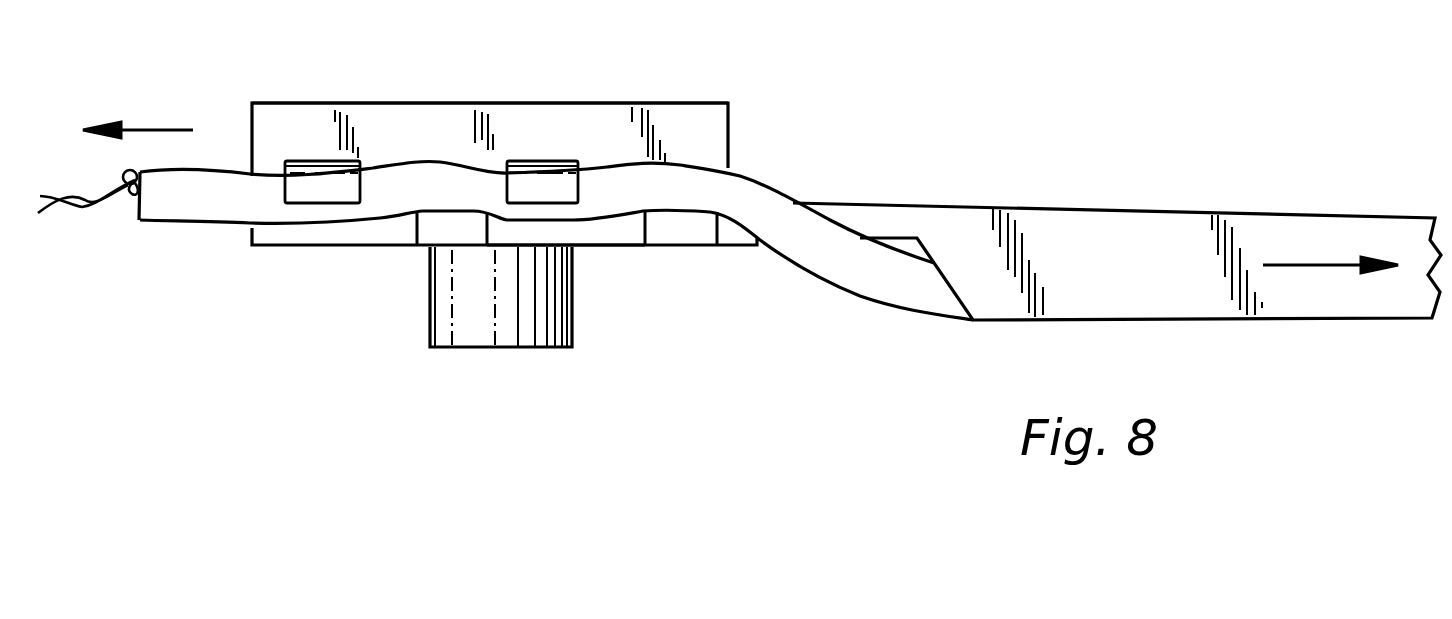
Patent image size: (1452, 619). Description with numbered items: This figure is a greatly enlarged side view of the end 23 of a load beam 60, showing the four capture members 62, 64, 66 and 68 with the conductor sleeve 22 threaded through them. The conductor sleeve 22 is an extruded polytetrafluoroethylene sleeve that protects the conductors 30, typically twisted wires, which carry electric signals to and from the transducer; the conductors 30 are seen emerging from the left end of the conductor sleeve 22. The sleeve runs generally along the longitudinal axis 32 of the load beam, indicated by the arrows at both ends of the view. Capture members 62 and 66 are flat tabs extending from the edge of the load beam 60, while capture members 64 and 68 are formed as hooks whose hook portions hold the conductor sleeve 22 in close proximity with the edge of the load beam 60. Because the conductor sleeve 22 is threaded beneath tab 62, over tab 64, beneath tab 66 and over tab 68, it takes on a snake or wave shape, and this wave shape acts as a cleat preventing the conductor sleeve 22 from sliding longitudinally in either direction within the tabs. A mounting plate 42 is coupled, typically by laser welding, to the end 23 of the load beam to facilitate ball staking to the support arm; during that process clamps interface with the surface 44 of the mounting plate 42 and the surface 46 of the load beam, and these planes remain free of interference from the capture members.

The conductor sleeve 22 is at (893, 272).
The end of load beam 23 is at (282, 248).
The conductors 30 is at (128, 196).
The longitudinal axis 32 is at (1318, 262).
The mounting plate 42 is at (730, 130).
The surface of mounting plate 44 is at (699, 102).
The surface of load beam 46 is at (608, 247).
The load beam 60 is at (1103, 220).
The capture member 62 is at (688, 235).
The capture member 64 is at (540, 175).
The capture member 66 is at (433, 232).
The capture member 68 is at (322, 173).